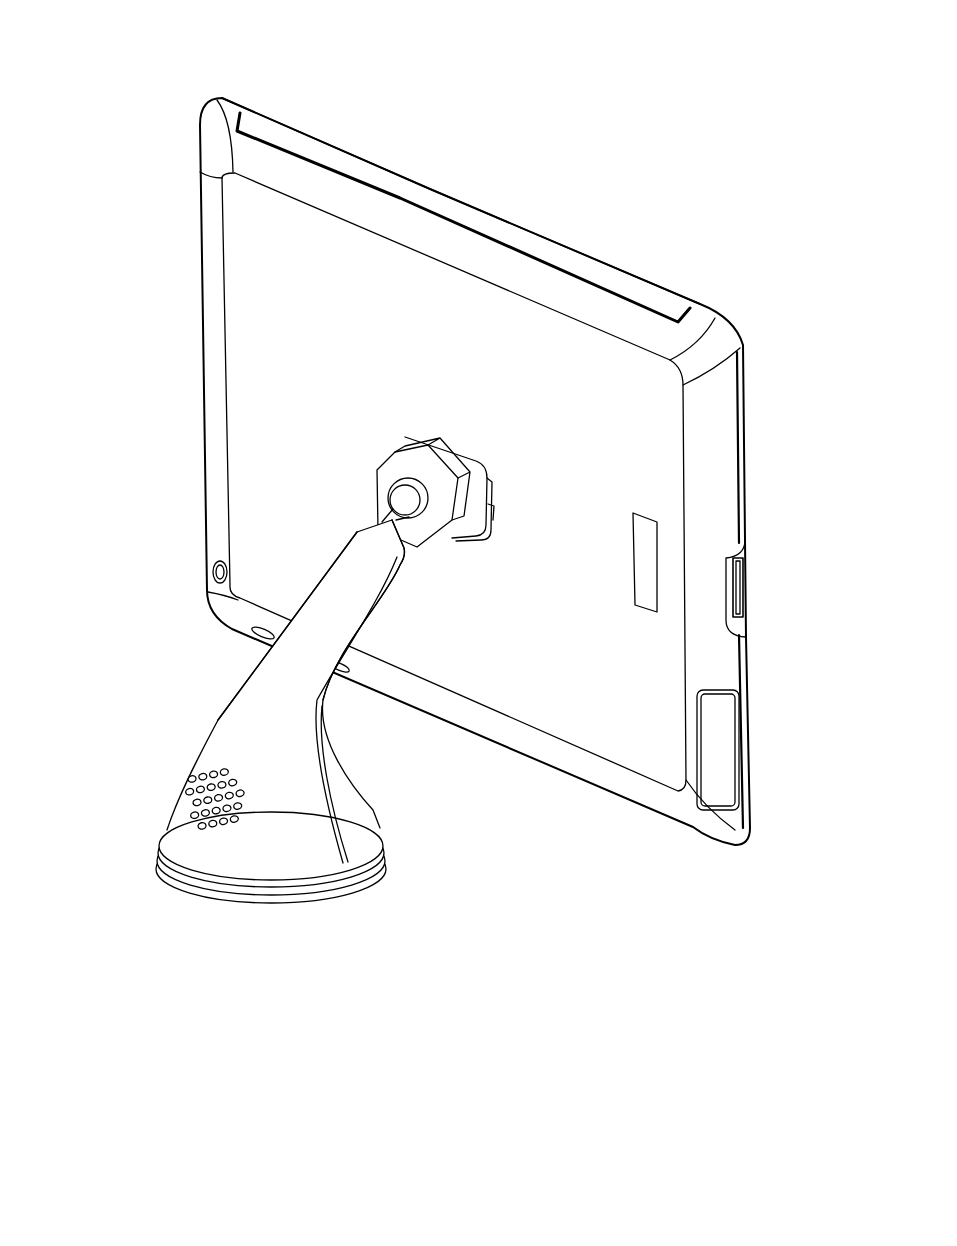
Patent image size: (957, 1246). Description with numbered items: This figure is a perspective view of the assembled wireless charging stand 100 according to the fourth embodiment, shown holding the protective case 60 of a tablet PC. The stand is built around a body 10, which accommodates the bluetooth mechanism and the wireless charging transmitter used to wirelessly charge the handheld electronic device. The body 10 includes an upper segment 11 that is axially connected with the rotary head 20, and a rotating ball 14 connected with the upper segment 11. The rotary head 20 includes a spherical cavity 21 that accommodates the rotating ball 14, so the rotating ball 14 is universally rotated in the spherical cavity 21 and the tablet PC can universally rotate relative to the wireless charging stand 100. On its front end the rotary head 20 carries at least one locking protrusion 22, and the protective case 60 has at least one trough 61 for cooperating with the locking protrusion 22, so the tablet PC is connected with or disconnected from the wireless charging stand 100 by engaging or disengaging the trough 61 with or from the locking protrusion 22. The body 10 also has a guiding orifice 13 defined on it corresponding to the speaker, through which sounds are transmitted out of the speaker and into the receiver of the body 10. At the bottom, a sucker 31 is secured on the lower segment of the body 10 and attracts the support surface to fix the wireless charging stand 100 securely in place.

The wireless charging stand 100 is at (66, 42).
The protective case 60 is at (198, 251).
The trough 61 is at (495, 512).
The rotary head 20 is at (405, 468).
The spherical cavity 21 is at (390, 483).
The locking protrusion 22 is at (495, 518).
The rotating ball 14 is at (397, 500).
The upper segment 11 is at (366, 548).
The body 10 is at (257, 730).
The guiding orifice 13 is at (192, 805).
The sucker 31 is at (378, 866).